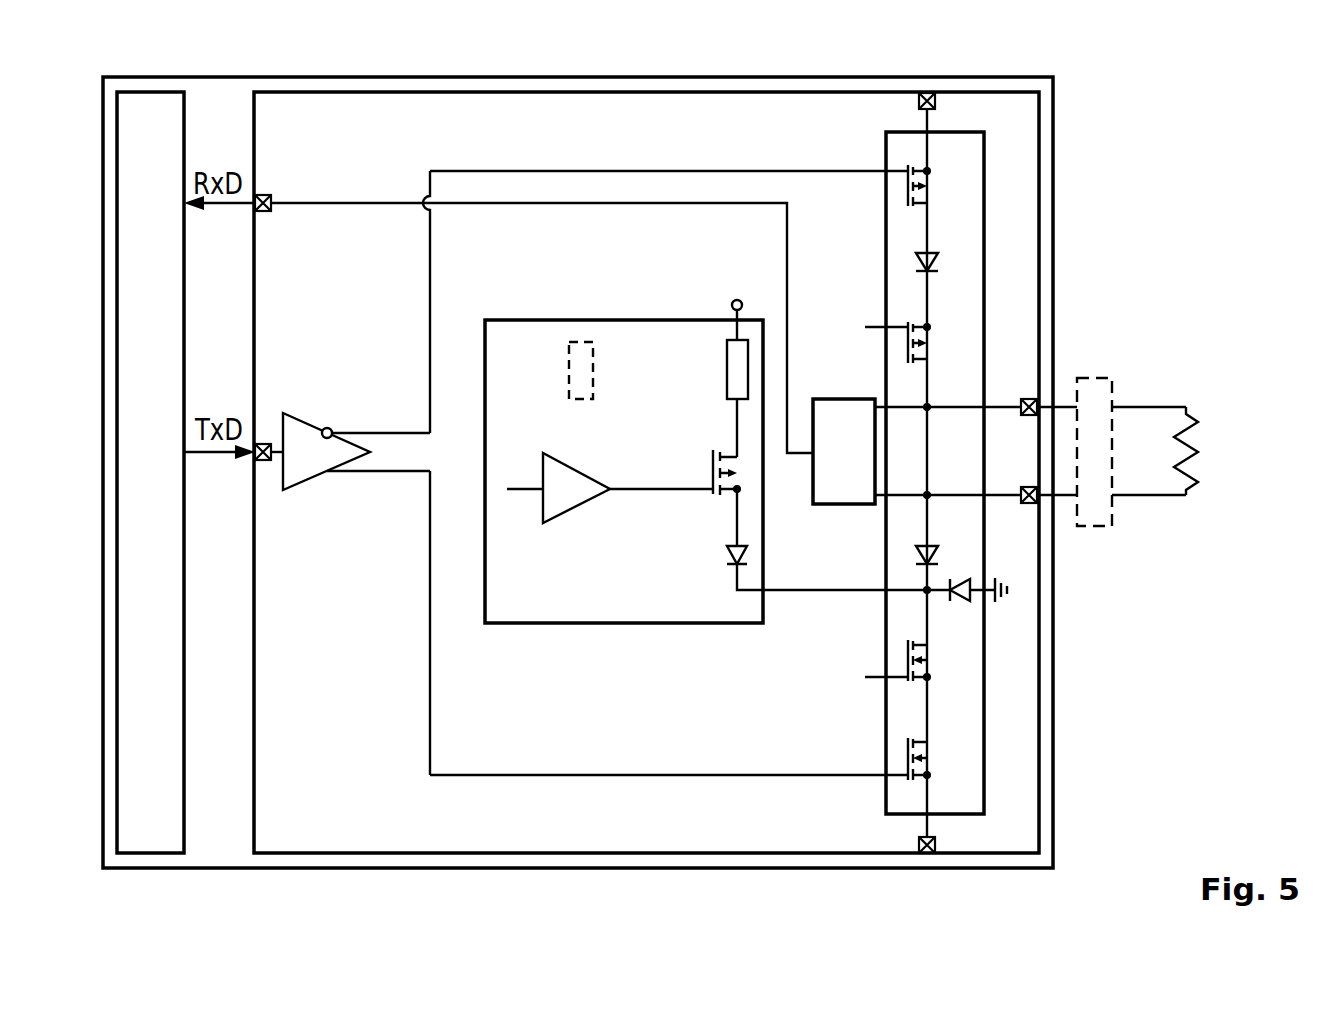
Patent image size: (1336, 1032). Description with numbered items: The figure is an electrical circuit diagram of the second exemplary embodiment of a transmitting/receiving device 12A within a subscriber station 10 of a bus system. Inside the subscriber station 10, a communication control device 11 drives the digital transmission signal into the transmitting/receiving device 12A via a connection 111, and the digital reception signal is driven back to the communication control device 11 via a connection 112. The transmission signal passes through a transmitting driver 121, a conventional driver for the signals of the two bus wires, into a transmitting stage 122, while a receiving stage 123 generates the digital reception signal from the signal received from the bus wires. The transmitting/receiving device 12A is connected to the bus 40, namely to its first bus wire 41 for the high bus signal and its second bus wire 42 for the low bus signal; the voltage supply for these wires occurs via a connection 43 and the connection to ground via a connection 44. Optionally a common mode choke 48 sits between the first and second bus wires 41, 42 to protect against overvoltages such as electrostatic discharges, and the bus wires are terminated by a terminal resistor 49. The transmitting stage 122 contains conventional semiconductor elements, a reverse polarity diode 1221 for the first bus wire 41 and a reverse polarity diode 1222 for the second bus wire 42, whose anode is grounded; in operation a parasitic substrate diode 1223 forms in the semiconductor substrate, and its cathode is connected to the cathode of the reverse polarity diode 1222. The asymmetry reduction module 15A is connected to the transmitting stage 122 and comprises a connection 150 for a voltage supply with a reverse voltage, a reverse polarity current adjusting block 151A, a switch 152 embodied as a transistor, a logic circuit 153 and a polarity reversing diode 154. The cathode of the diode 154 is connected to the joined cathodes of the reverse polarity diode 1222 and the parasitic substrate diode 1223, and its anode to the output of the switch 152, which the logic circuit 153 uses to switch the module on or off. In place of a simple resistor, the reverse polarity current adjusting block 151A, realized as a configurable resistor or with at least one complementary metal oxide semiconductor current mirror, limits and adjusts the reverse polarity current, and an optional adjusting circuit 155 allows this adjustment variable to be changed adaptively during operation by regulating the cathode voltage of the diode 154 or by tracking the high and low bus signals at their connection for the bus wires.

The subscriber station 10 is at (1054, 100).
The communication control device 11 is at (150, 92).
The transmitting/receiving device 12A is at (647, 92).
The connection 111 is at (265, 461).
The connection 112 is at (265, 212).
The transmitting driver 121 is at (313, 478).
The transmitting stage 122 is at (887, 718).
The receiving stage 123 is at (867, 470).
The reverse polarity diode 1221 is at (914, 262).
The reverse polarity diode 1222 is at (914, 555).
The parasitic substrate diode 1223 is at (962, 600).
The asymmetry reduction module 15A is at (625, 320).
The connection 150 is at (737, 300).
The reverse polarity current adjusting block 151A is at (727, 376).
The switch 152 is at (713, 471).
The logic circuit 153 is at (580, 520).
The diode 154 is at (727, 556).
The adjusting circuit 155 is at (568, 378).
The bus 40 is at (1203, 378).
The first bus wire 41 is at (1146, 406).
The second bus wire 42 is at (1146, 498).
The connection 43 is at (927, 93).
The connection 44 is at (927, 853).
The common mode choke 48 is at (1093, 376).
The terminal resistor 49 is at (1192, 462).